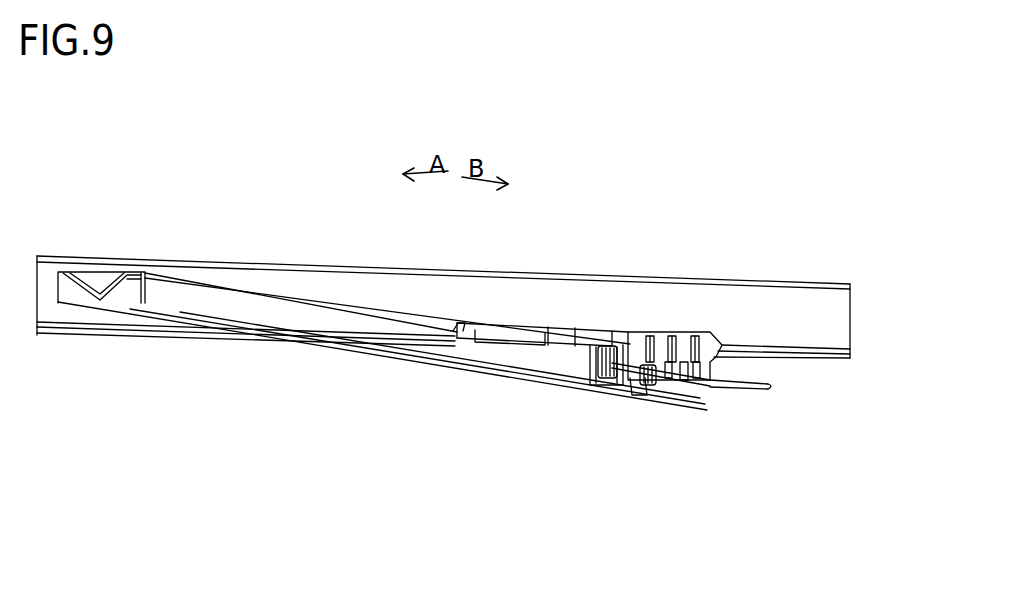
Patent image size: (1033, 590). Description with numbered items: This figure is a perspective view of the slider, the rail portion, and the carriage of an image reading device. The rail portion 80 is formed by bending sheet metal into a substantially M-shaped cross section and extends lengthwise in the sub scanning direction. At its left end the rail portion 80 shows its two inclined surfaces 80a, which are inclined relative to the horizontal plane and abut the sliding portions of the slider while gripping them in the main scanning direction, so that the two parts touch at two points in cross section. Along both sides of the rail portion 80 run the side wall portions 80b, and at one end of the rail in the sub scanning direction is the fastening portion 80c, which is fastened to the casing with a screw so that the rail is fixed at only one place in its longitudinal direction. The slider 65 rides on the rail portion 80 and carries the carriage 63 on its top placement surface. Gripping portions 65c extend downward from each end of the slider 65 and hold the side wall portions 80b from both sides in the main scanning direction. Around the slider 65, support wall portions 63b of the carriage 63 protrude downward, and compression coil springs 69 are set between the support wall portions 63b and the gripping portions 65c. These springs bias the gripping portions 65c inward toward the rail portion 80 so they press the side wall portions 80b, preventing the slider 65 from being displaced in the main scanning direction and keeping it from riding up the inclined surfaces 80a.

The carriage 63 is at (840, 341).
The support wall portions 63b is at (660, 372).
The slider 65 is at (530, 327).
The gripping portions 65c is at (602, 392).
The compression coil springs 69 is at (610, 377).
The rail portion 80 is at (307, 310).
The inclined surfaces 80a is at (102, 281).
The side wall portions 80b is at (85, 297).
The fastening portion 80c is at (774, 399).